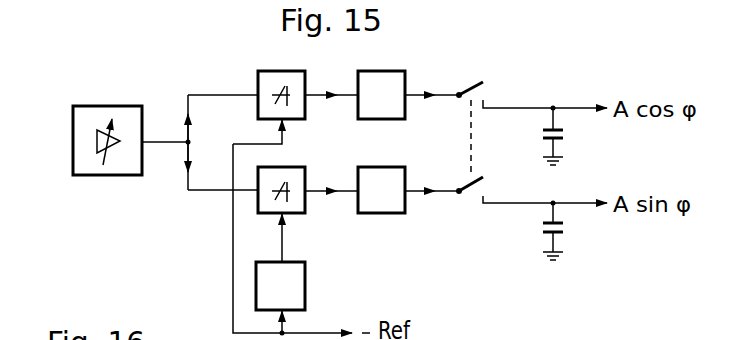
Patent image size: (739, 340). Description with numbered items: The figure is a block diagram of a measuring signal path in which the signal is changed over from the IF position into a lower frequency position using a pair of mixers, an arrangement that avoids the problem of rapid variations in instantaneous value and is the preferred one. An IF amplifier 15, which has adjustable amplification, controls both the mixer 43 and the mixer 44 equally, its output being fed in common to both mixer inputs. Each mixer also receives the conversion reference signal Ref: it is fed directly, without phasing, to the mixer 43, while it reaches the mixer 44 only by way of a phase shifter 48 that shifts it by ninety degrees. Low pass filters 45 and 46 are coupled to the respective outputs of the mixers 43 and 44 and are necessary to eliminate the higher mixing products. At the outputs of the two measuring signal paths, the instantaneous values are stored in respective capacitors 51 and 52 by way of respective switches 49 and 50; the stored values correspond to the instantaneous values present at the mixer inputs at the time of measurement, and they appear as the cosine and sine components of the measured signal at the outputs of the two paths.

The IF amplifier 15 is at (100, 106).
The mixer 43 is at (277, 66).
The mixer 44 is at (288, 167).
The low pass filter 45 is at (387, 70).
The low pass filter 46 is at (398, 152).
The phase shifter 48 is at (308, 283).
The switch 49 is at (531, 91).
The switch 50 is at (531, 185).
The capacitor 51 is at (565, 136).
The capacitor 52 is at (565, 231).